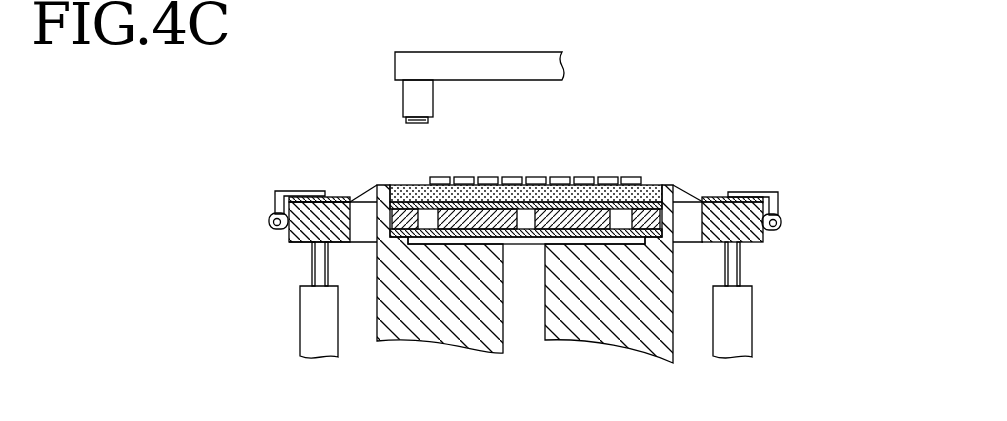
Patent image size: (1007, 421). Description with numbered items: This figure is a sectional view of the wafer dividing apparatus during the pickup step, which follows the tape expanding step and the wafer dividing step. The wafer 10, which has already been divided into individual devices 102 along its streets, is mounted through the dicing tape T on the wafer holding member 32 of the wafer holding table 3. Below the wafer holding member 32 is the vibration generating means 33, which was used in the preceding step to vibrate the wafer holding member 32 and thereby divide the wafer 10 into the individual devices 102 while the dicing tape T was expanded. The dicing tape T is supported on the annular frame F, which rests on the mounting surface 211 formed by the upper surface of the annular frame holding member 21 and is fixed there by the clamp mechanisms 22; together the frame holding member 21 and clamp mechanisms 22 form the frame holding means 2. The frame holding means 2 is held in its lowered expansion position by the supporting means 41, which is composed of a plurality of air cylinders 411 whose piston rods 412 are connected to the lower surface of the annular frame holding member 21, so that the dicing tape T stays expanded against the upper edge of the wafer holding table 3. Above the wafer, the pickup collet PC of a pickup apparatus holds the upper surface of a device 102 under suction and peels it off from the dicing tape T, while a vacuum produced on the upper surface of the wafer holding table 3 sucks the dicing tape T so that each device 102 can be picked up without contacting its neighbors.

The pickup collet PC is at (403, 101).
The device 102 is at (535, 178).
The mounting surface 211 is at (313, 197).
The annular frame F is at (340, 197).
The clamp mechanism 22 is at (266, 197).
The frame holding means 2 is at (267, 239).
The annular frame holding member 21 is at (292, 244).
The supporting means 41 is at (528, 305).
The wafer holding table 3 is at (415, 346).
The wafer holding member 32 is at (487, 196).
The wafer 10 is at (481, 139).
The vibration generating means 33 is at (650, 199).
The dicing tape T is at (678, 193).
The piston rod 412 is at (738, 269).
The air cylinder 411 is at (750, 345).